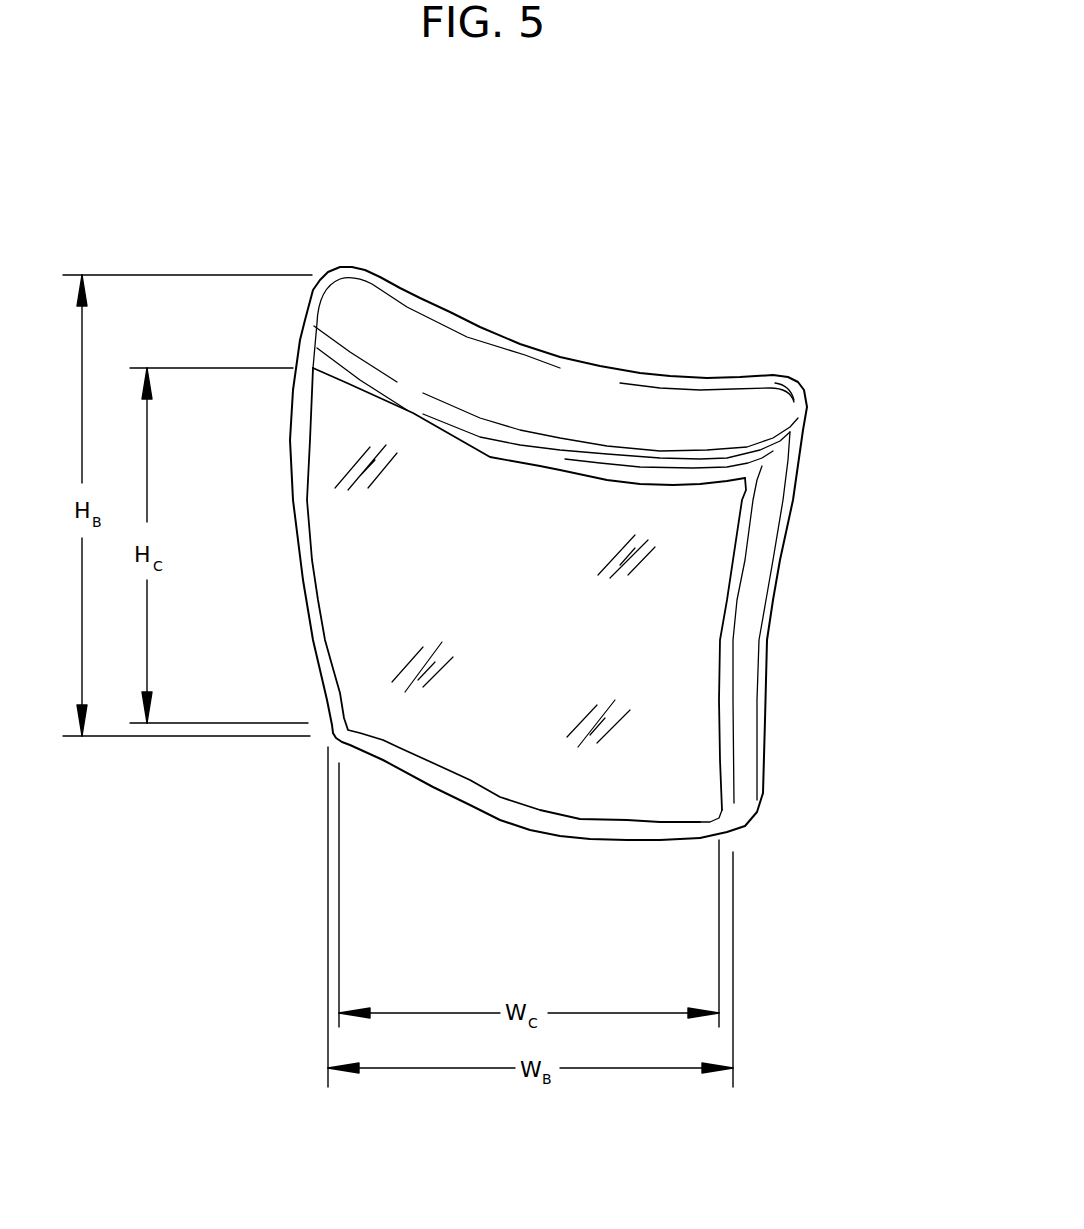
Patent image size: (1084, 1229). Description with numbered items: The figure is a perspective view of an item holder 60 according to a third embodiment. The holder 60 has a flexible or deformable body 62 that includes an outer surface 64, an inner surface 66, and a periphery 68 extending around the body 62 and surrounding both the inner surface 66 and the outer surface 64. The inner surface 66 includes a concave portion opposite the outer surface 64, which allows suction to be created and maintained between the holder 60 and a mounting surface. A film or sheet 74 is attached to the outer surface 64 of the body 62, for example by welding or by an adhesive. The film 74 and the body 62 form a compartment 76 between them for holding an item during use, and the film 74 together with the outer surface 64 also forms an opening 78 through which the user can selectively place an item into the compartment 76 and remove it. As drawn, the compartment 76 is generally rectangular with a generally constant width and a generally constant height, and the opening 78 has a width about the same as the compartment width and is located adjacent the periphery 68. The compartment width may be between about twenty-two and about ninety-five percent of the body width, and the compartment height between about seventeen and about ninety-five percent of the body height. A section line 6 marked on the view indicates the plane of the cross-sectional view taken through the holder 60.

The section line 6- 6 is at (534, 323).
The item holder 60 is at (786, 317).
The flexible body 62 is at (797, 472).
The outer surface 64 is at (397, 770).
The inner surface 66 is at (412, 330).
The periphery 68 is at (695, 838).
The film 74 is at (710, 548).
The compartment 76 is at (594, 445).
The opening 78 is at (412, 430).